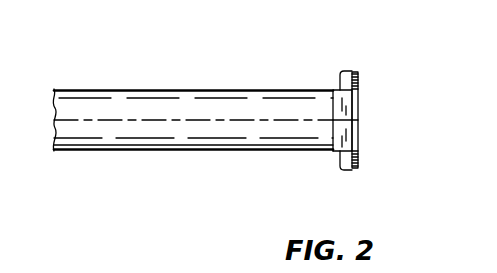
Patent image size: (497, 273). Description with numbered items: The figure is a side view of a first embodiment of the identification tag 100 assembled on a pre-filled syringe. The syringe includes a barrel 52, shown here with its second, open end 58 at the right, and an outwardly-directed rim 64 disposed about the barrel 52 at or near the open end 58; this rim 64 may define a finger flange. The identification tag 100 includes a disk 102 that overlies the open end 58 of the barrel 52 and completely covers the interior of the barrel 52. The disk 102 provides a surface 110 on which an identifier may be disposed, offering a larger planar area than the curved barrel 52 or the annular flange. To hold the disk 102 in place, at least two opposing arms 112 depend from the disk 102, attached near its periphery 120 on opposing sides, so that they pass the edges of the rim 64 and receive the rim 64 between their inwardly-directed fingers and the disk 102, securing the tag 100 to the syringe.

The barrel 52 is at (189, 138).
The second, open end 58 is at (330, 156).
The rim 64 is at (339, 74).
The identification tag 100 is at (367, 110).
The disk 102 is at (356, 153).
The surface 110 is at (358, 82).
The arms 112 is at (343, 127).
The periphery 120 is at (357, 168).